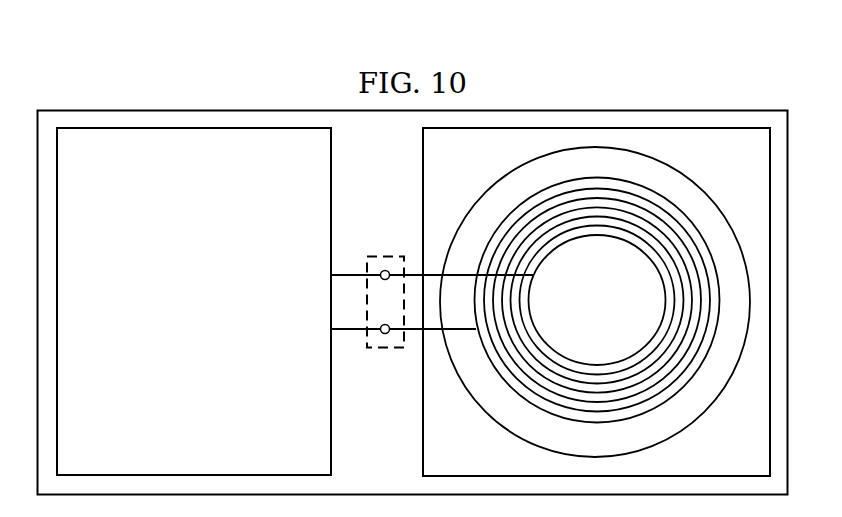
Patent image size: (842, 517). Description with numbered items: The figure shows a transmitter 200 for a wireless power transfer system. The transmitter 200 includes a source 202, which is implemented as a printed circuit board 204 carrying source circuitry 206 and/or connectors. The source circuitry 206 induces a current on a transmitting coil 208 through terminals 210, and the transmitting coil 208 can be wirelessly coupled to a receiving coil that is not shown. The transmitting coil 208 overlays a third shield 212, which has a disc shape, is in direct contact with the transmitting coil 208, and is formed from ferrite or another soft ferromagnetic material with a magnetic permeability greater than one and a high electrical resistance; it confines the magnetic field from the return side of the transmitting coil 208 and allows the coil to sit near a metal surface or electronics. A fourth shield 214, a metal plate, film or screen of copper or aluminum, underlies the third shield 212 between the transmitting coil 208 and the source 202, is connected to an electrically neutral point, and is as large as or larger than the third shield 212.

The transmitter 200 is at (542, 66).
The source 202 is at (393, 443).
The printed circuit board 204 is at (293, 110).
The source circuitry 206 is at (211, 331).
The transmitting coil 208 is at (517, 205).
The terminals 210 is at (374, 254).
The third shield 212 is at (699, 184).
The fourth shield 214 is at (423, 173).